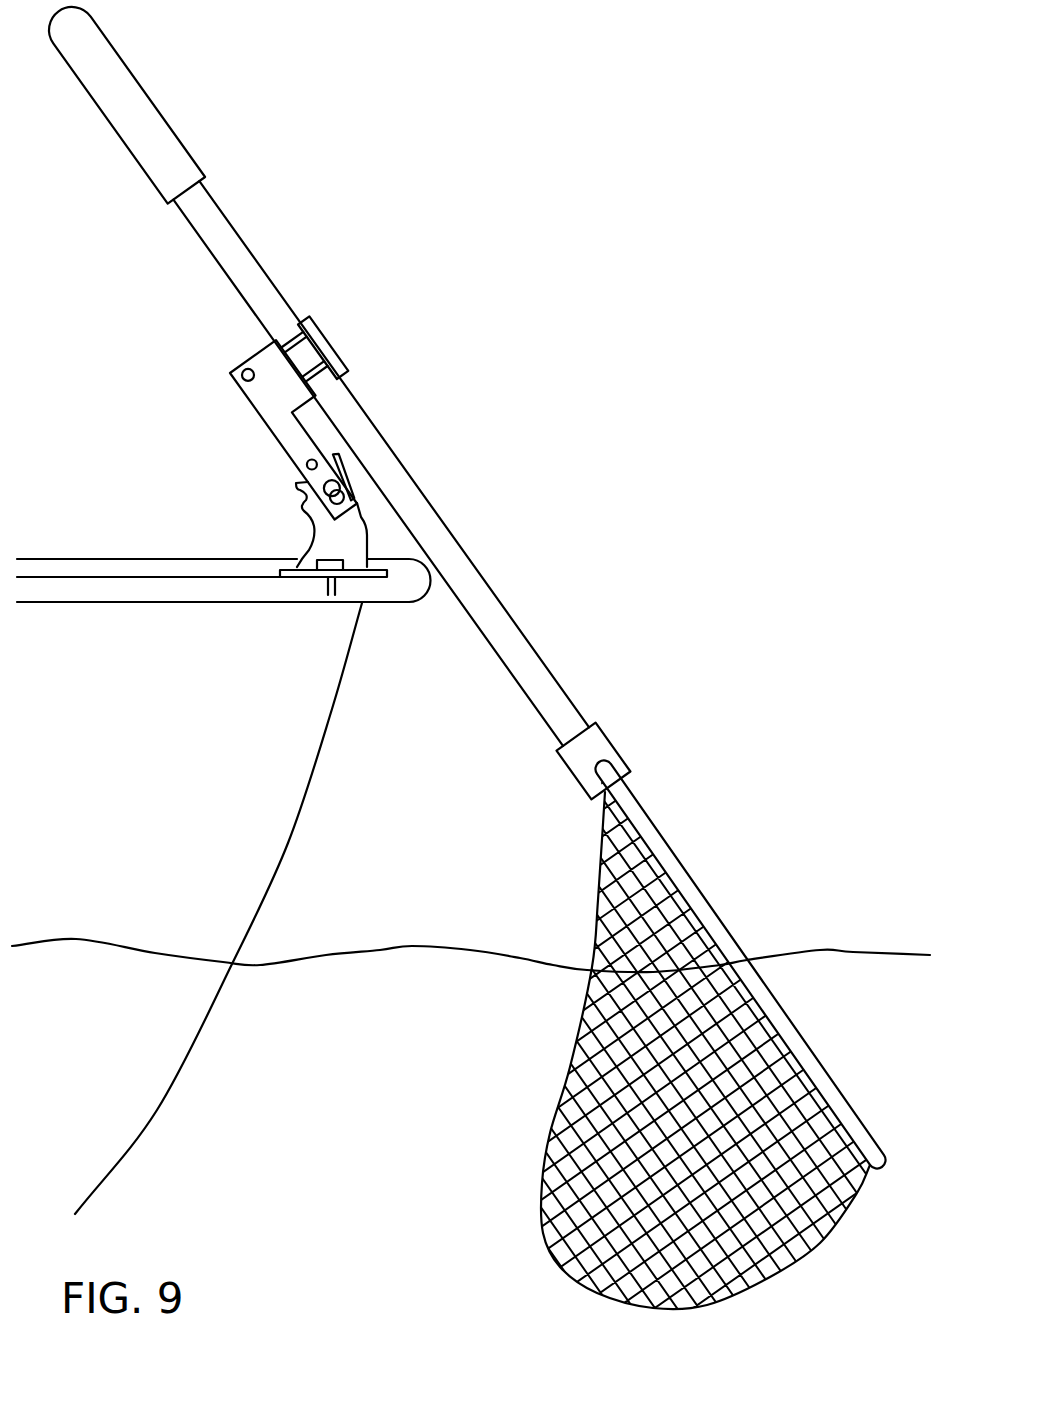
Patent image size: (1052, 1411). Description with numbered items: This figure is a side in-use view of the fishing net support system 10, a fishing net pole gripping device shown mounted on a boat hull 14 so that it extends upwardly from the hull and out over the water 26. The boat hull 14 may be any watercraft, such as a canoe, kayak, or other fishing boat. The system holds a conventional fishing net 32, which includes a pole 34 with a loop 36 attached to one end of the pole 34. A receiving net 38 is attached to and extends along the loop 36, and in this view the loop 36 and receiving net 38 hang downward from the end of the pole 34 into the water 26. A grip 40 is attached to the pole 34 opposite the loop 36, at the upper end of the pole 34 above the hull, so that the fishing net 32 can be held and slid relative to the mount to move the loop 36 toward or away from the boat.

The fishing net support system 10 is at (424, 304).
The boat hull 14 is at (330, 707).
The water 26 is at (364, 948).
The fishing net 32 is at (624, 681).
The pole 34 is at (505, 622).
The loop 36 is at (673, 872).
The receiving net 38 is at (573, 1205).
The grip 40 is at (138, 105).